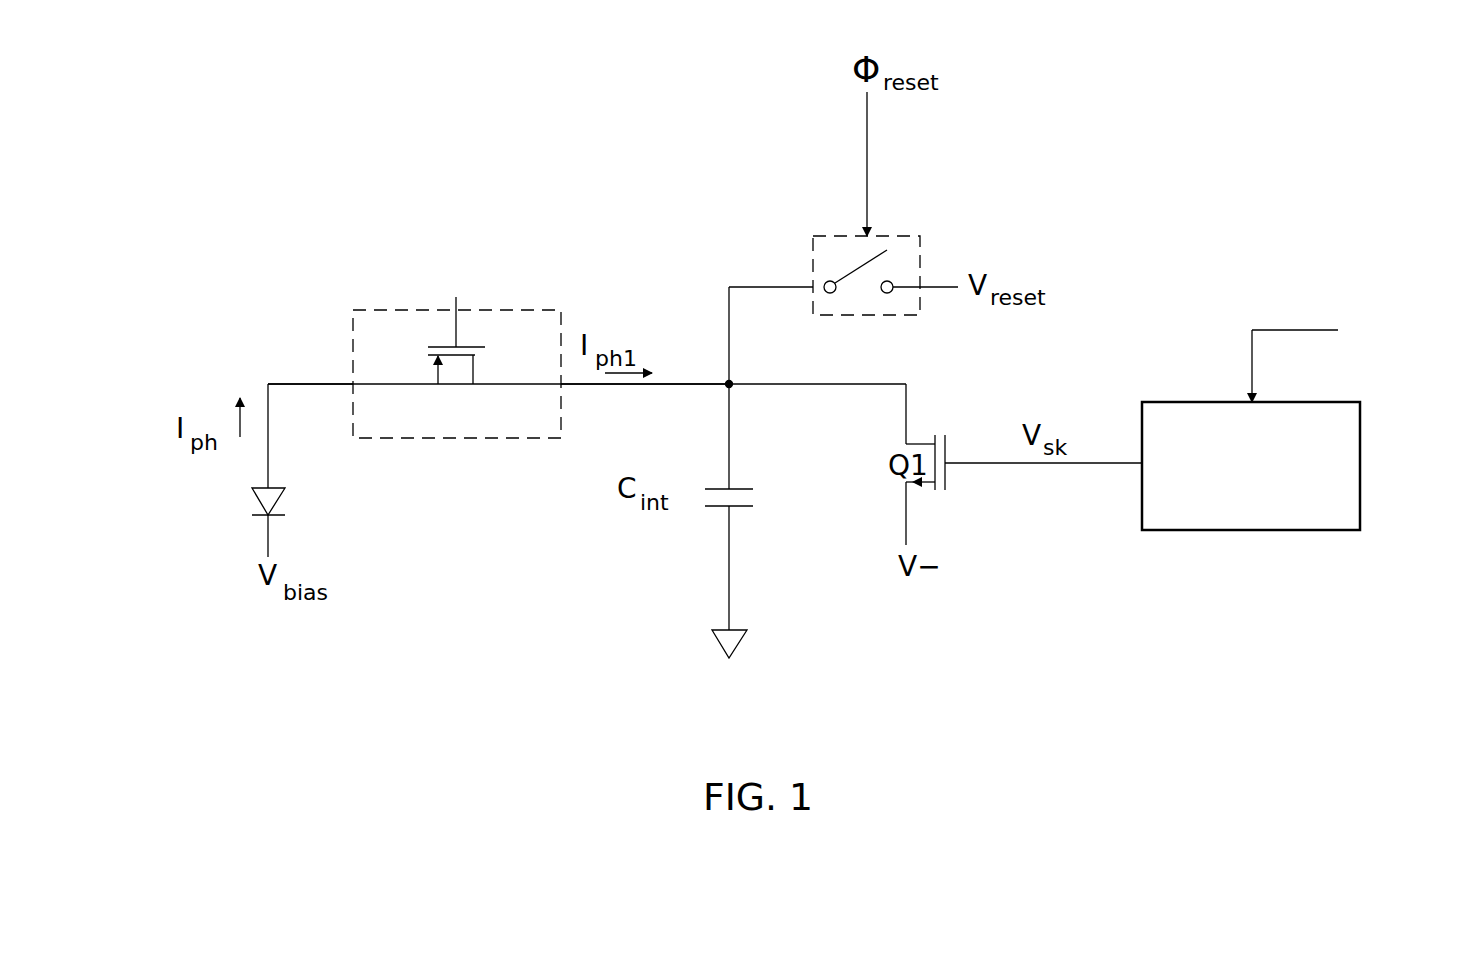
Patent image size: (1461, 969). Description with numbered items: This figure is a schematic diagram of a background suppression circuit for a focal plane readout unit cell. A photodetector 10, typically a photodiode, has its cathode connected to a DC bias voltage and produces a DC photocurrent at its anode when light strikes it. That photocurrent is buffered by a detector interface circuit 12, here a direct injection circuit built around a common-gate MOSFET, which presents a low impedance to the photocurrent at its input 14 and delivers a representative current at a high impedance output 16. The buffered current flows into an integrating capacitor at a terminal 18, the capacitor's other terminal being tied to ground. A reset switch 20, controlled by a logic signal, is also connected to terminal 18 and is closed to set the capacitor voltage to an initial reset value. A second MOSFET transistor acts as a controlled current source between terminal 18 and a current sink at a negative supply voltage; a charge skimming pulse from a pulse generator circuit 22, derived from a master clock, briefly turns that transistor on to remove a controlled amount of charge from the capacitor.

The photodetector 10 is at (258, 503).
The detector interface circuit 12 is at (563, 316).
The input 14 is at (353, 383).
The high impedance output 16 is at (562, 385).
The terminal 18 is at (732, 386).
The reset switch 20 is at (920, 262).
The pulse generator circuit 22 is at (1141, 507).